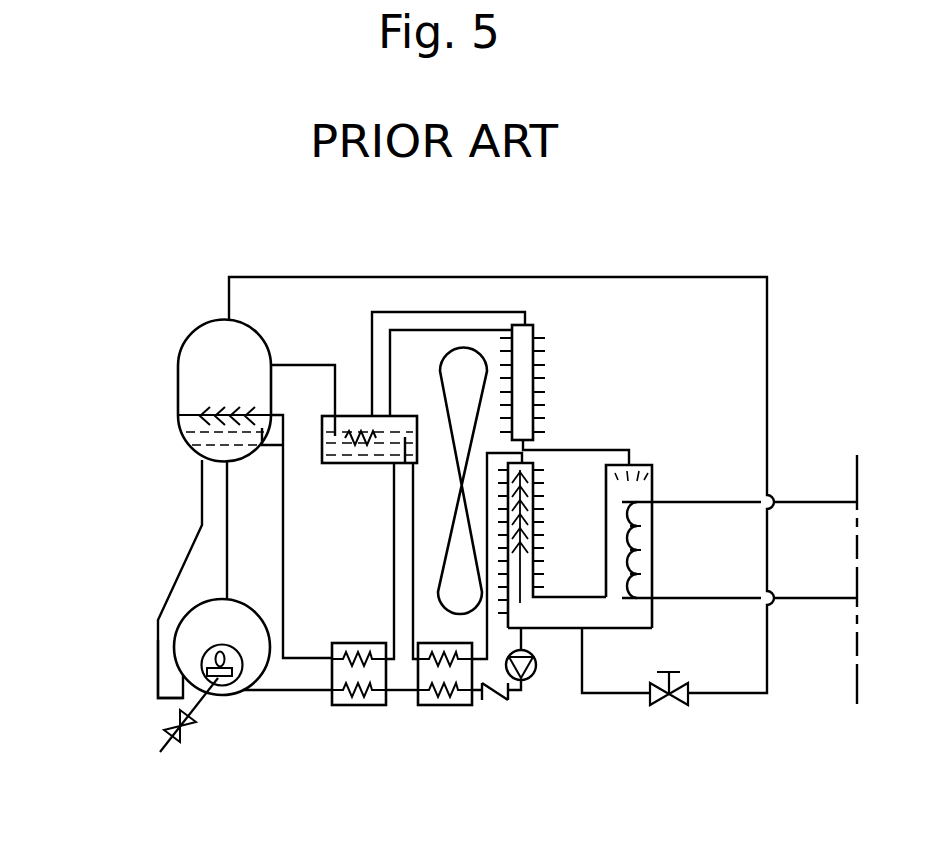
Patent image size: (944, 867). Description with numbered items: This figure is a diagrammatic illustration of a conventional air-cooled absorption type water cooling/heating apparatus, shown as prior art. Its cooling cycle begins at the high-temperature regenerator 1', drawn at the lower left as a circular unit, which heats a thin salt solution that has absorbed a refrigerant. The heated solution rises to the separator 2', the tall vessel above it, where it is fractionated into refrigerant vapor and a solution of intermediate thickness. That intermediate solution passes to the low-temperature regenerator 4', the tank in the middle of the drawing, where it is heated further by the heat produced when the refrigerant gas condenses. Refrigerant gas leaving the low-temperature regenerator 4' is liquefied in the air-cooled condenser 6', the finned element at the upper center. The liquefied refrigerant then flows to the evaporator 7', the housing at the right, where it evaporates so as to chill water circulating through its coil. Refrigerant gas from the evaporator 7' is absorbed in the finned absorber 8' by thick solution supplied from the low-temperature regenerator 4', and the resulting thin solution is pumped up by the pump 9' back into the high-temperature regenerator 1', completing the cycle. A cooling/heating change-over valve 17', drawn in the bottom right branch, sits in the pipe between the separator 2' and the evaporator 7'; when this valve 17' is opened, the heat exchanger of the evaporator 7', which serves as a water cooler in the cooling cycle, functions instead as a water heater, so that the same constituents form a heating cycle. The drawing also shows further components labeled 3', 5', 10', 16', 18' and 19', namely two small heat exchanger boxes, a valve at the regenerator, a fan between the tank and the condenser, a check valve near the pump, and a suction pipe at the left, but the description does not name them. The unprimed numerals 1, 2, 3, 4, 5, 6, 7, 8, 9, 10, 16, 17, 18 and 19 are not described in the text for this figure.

The high-temperature regenerator 1' is at (239, 686).
The separator 2' is at (208, 391).
The heat exchanger 3' is at (359, 709).
The low-temperature regenerator 4' is at (372, 407).
The heat exchanger 5' is at (445, 709).
The air-cooled condenser 6' is at (539, 371).
The evaporator 7' is at (635, 511).
The absorber 8' is at (552, 511).
The pump 9' is at (530, 712).
The valve 10' is at (209, 725).
The fan 16' is at (453, 480).
The cooling/heating change-over valve 17' is at (663, 726).
The check valve 18' is at (498, 729).
The suction pipe 19' is at (142, 669).
The compressor 1 is at (239, 686).
The oil separator / receiver vessel 2 is at (208, 391).
The heat exchanger 3 is at (359, 709).
The liquid tank 4 is at (372, 407).
The heat exchanger 5 is at (445, 709).
The condenser coil 6 is at (539, 371).
The evaporative condenser 7 is at (635, 511).
The evaporator coil 8 is at (552, 511).
The pump 9 is at (530, 712).
The valve 10 is at (209, 725).
The fan 16 is at (453, 480).
The valve 17 is at (663, 726).
The check valve 18 is at (498, 729).
The suction pipe 19 is at (142, 669).